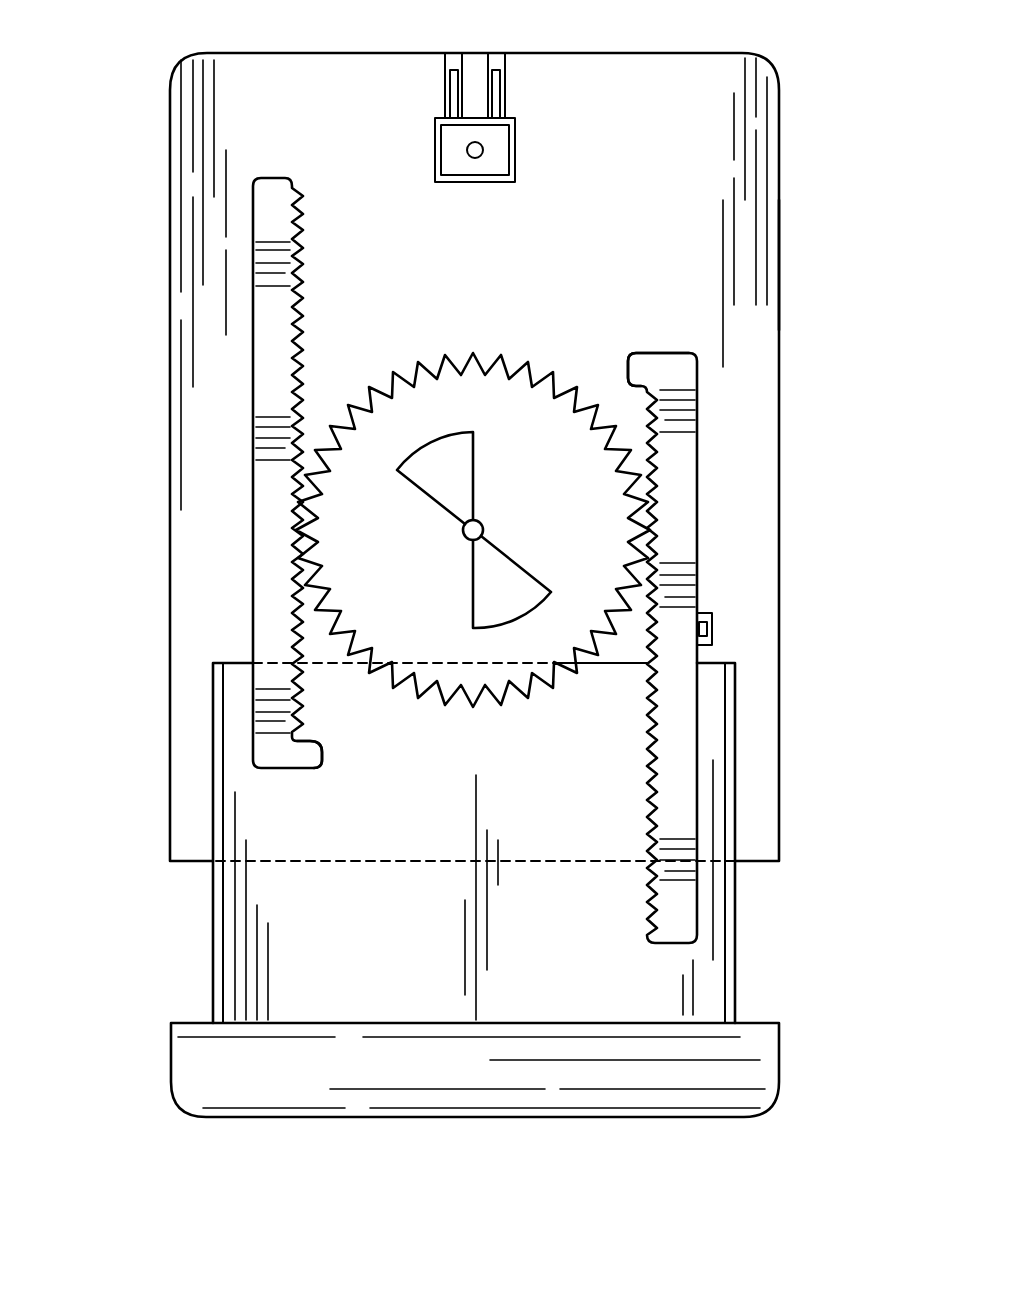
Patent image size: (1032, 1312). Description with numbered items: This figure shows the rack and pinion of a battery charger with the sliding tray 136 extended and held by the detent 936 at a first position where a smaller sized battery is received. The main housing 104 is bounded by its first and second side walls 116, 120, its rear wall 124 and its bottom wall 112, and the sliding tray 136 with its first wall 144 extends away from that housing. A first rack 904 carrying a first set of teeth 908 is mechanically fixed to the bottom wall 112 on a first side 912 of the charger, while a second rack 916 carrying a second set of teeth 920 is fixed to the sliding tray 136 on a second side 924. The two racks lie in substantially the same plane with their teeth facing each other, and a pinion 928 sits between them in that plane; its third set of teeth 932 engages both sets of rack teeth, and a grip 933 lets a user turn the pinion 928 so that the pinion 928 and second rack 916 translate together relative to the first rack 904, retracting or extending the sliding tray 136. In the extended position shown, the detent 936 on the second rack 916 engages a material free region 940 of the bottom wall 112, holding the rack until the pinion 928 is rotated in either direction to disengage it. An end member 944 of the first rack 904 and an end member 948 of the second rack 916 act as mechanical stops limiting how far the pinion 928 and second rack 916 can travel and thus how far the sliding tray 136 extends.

The main housing 104 is at (140, 462).
The bottom wall 112 is at (510, 225).
The first side wall 116 is at (780, 262).
The second side wall 120 is at (170, 168).
The rear wall 124 is at (472, 52).
The sliding tray 136 is at (212, 945).
The first wall 144 is at (328, 1115).
The first rack 904 is at (322, 300).
The first set of teeth 908 is at (305, 375).
The first side 912 is at (268, 40).
The second rack 916 is at (650, 325).
The second set of teeth 920 is at (650, 750).
The second side 924 is at (715, 38).
The pinion 928 is at (392, 560).
The third set of teeth 932 is at (455, 365).
The grip 933 is at (520, 592).
The detent 936 is at (705, 622).
The material free region 940 is at (715, 632).
The end member 944 is at (320, 750).
The end member 948 is at (670, 365).